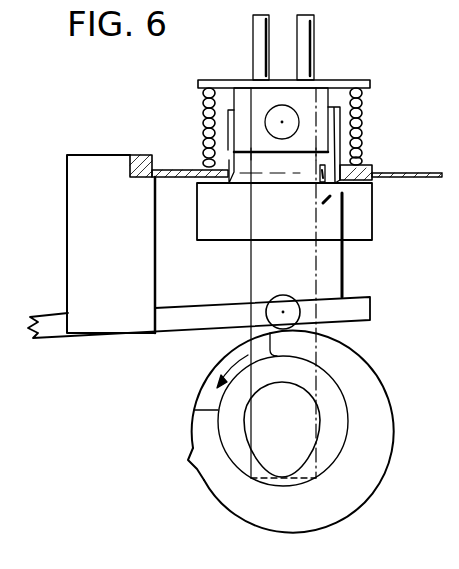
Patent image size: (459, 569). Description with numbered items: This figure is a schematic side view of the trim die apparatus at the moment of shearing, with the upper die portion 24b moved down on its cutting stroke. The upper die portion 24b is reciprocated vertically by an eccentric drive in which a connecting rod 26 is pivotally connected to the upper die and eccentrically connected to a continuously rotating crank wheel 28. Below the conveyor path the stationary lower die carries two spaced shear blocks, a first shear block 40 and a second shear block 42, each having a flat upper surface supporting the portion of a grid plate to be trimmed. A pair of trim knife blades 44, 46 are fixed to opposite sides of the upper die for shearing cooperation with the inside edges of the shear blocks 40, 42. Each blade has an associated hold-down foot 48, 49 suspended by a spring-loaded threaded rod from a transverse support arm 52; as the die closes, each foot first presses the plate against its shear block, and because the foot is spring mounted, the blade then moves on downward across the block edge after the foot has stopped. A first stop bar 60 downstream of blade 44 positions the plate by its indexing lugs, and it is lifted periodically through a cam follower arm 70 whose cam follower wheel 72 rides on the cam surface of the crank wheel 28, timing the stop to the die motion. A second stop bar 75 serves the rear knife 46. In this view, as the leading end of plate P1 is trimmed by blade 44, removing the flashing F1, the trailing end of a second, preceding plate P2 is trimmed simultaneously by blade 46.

The upper die portion 24b is at (323, 96).
The connecting rod 26 is at (251, 252).
The crank wheel 28 is at (374, 387).
The first shear block 40 is at (366, 181).
The second shear block 42 is at (243, 199).
The trim knife blade 44 is at (336, 142).
The trim knife blade 46 is at (231, 108).
The hold-down foot 48 is at (362, 166).
The hold-down foot 49 is at (197, 169).
The transverse support arm 52 is at (368, 84).
The first stop bar 60 is at (320, 181).
The cam follower arm 70 is at (369, 297).
The cam follower wheel 72 is at (296, 296).
The second stop bar 75 is at (145, 156).
The plate P1 is at (410, 180).
The preceding plate P2 is at (172, 178).
The metal flashing F1 is at (323, 203).